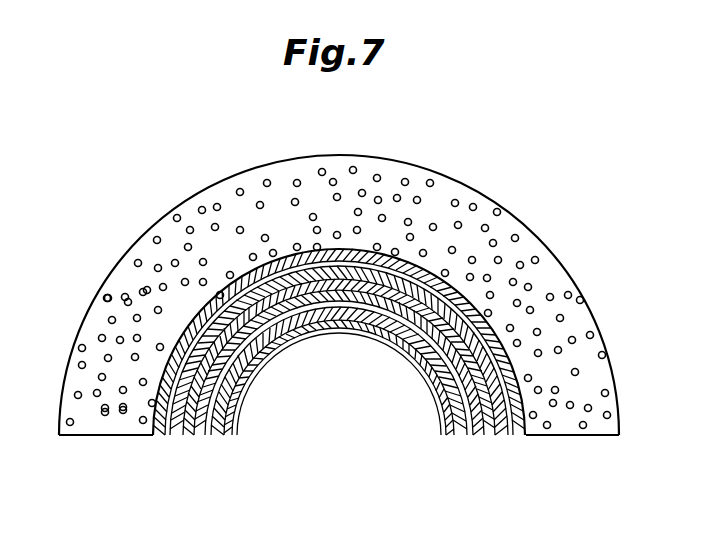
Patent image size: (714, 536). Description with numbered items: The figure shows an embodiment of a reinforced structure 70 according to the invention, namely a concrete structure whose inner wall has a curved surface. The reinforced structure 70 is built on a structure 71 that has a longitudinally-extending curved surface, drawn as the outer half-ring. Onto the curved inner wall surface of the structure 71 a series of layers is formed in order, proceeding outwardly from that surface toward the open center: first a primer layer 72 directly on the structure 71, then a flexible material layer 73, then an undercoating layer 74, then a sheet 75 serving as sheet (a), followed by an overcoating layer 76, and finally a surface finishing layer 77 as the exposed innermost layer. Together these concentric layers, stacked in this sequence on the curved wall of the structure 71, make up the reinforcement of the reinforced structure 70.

The reinforced structure 70 is at (155, 190).
The structure 71 is at (552, 269).
The primer layer 72 is at (520, 434).
The flexible material layer 73 is at (505, 434).
The undercoating layer 74 is at (490, 434).
The sheet 75 is at (195, 437).
The overcoating layer 76 is at (208, 437).
The surface finishing layer 77 is at (218, 438).